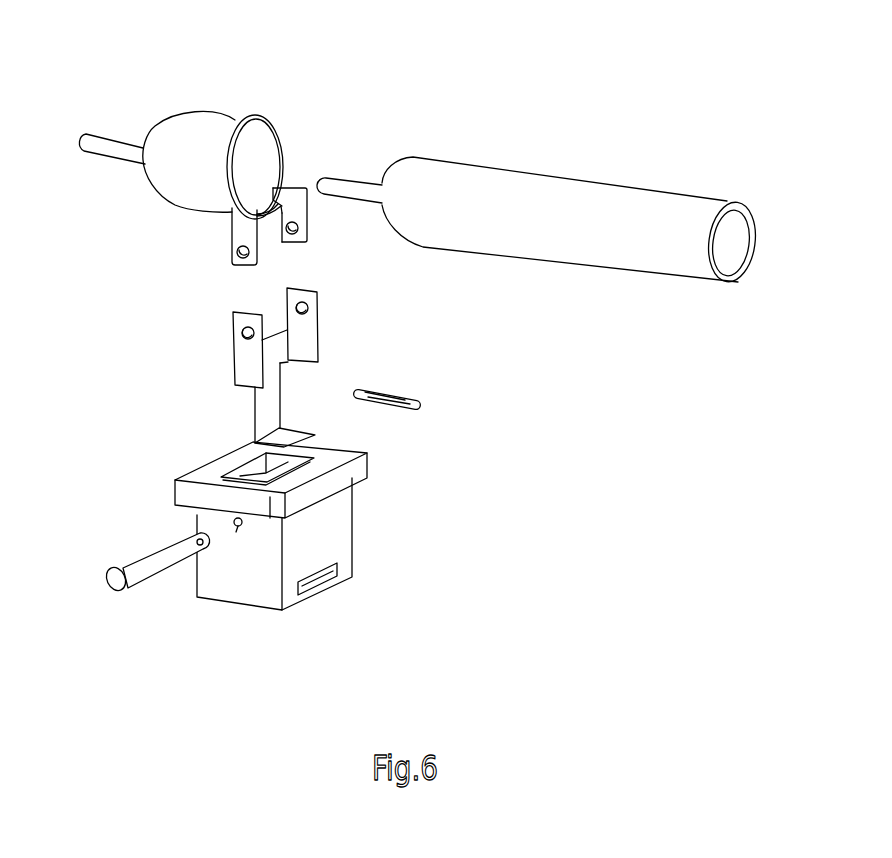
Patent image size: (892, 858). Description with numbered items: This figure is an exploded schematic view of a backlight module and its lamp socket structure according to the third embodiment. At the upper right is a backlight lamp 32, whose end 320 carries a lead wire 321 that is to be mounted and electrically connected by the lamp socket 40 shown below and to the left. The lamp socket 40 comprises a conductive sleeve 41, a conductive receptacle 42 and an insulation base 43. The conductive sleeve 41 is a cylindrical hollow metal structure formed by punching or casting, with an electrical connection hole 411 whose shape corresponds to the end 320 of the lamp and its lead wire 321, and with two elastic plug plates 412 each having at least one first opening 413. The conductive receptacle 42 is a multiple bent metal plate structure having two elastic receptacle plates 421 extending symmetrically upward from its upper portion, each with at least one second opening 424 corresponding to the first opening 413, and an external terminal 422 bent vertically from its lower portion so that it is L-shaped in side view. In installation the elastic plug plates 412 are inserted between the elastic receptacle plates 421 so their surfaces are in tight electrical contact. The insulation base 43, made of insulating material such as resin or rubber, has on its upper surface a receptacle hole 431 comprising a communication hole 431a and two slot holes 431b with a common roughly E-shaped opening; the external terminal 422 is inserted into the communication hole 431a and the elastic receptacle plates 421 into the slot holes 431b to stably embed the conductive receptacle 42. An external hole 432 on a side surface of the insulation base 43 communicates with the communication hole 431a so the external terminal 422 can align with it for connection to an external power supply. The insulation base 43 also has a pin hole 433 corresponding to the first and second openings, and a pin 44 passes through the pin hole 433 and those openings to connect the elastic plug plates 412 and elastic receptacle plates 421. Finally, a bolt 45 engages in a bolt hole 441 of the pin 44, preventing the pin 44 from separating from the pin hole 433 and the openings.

The backlight lamp 32 is at (538, 190).
The end of the backlight lamp 320 is at (410, 173).
The lead wire 321 is at (338, 183).
The lamp socket 40 is at (114, 367).
The conductive sleeve 41 is at (202, 145).
The electrical connection hole 411 is at (263, 153).
The elastic plug plates 412 is at (186, 228).
The first opening 413 is at (236, 253).
The conductive receptacle 42 is at (244, 367).
The elastic receptacle plates 421 is at (190, 360).
The external terminal 422 is at (290, 437).
The second opening 424 is at (243, 335).
The insulation base 43 is at (349, 561).
The receptacle hole 431 is at (349, 466).
The communication hole 431a is at (330, 458).
The slot holes 431b is at (312, 452).
The external hole 432 is at (345, 578).
The pin hole 433 is at (235, 530).
The pin 44 is at (156, 606).
The bolt hole 441 is at (200, 555).
The bolt 45 is at (394, 397).